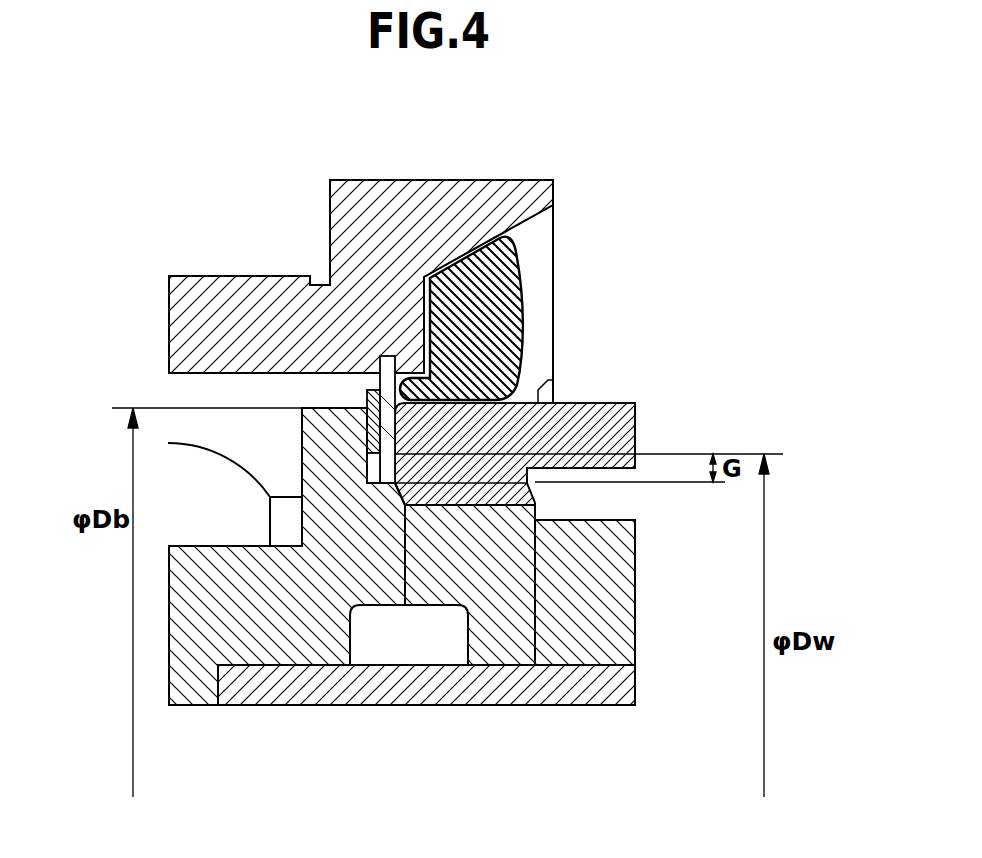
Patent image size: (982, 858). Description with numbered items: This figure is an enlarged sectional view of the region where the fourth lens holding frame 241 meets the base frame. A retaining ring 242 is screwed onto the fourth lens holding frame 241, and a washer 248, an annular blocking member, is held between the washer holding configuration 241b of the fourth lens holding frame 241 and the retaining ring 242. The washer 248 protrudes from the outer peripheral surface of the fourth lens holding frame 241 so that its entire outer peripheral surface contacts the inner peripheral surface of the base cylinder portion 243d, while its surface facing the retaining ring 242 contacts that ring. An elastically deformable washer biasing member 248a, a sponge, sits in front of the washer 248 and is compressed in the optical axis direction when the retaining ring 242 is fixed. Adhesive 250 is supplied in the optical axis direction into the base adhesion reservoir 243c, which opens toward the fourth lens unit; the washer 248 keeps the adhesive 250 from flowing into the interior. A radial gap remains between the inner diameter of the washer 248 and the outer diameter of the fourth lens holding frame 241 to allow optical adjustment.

The fourth lens holding frame 241 is at (193, 608).
The washer holding configuration 241b is at (320, 415).
The retaining ring 242 is at (588, 410).
The base adhesion reservoir 243c is at (533, 240).
The base cylinder portion 243d is at (217, 320).
The washer 248 is at (393, 383).
The washer biasing member 248a is at (370, 390).
The adhesive 250 is at (470, 286).